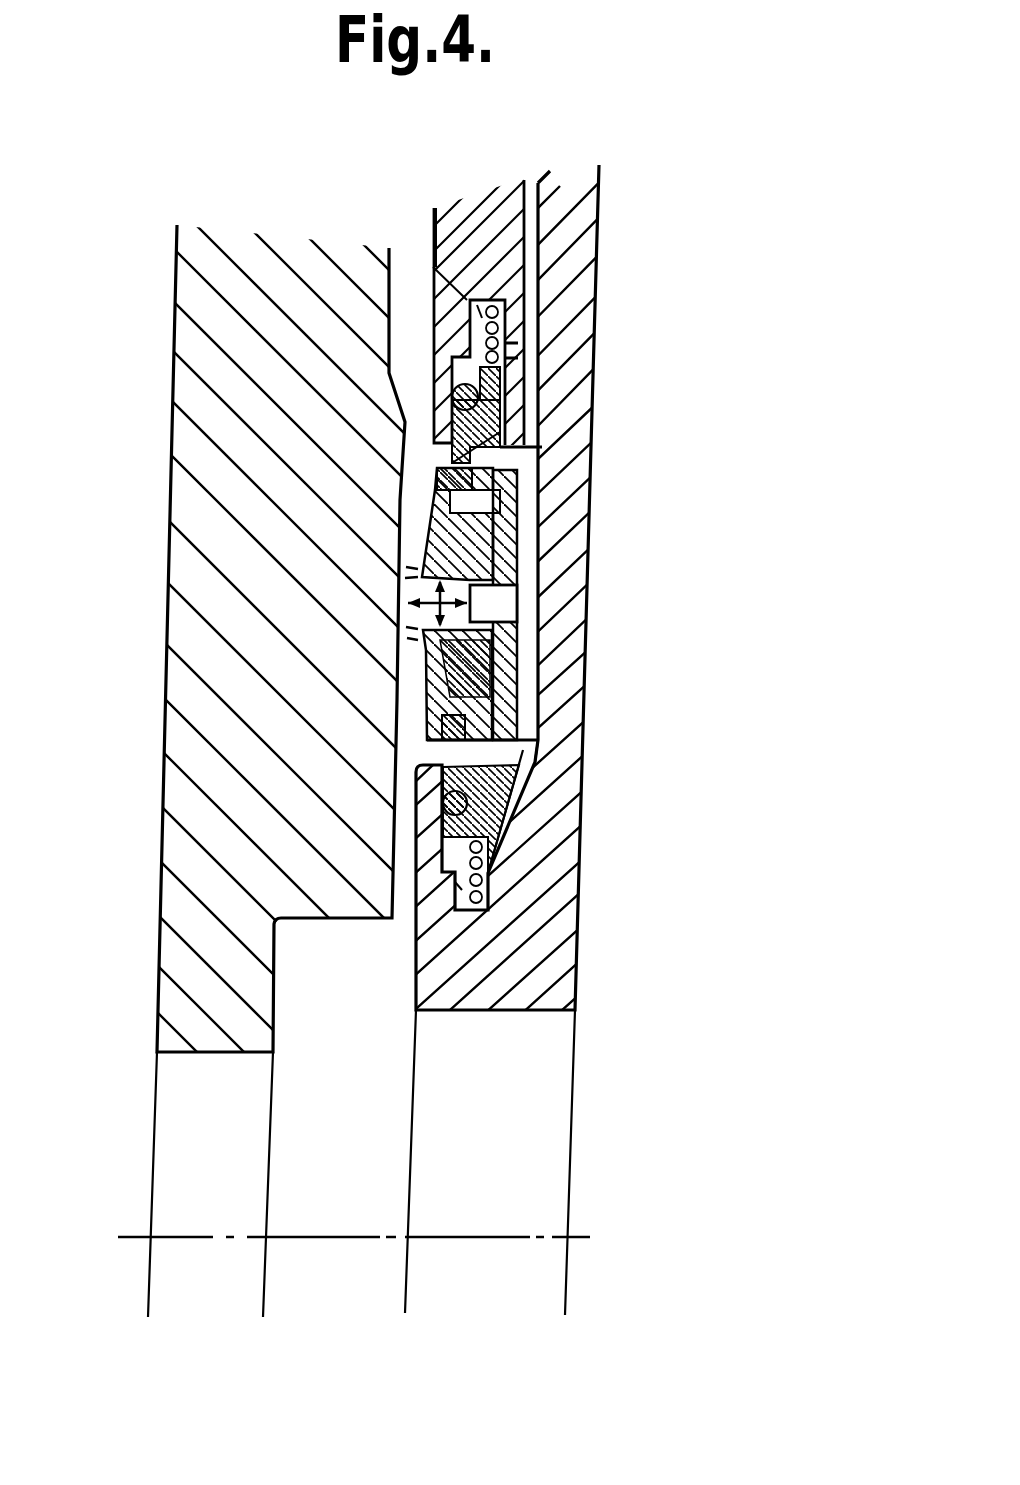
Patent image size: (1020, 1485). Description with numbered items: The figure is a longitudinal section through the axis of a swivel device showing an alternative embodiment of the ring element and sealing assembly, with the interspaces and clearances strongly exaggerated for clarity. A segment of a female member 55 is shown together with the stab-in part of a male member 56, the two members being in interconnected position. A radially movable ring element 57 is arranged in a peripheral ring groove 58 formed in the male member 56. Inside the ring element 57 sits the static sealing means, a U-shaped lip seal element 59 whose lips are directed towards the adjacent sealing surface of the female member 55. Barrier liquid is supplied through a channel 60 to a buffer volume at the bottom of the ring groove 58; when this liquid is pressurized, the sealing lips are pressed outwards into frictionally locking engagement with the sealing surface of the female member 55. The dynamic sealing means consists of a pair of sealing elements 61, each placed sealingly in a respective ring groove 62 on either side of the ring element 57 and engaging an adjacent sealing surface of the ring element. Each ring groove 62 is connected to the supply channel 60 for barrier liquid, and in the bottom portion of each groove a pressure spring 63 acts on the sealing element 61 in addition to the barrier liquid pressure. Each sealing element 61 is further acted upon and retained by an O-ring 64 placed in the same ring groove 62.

The female member 55 is at (148, 823).
The male member 56 is at (592, 952).
The ring element 57 is at (505, 508).
The ring groove 58 is at (517, 753).
The lip seal element 59 is at (493, 565).
The channel 60 is at (533, 268).
The sealing elements 61 is at (490, 453).
The ring grooves 62 is at (433, 267).
The pressure spring 63 is at (490, 870).
The O-ring 64 is at (478, 397).